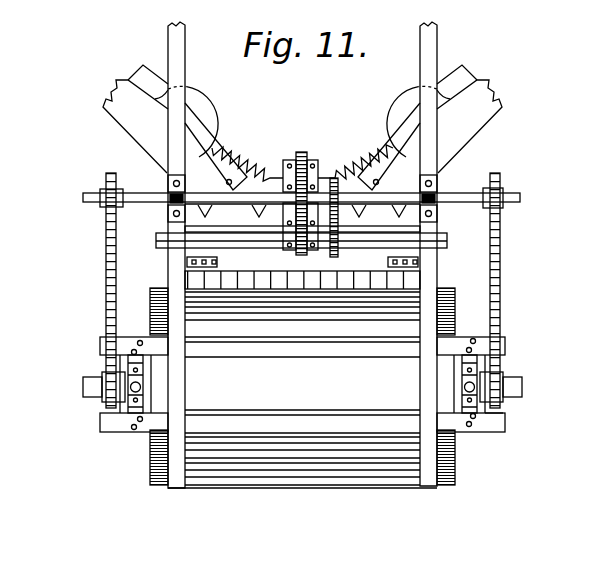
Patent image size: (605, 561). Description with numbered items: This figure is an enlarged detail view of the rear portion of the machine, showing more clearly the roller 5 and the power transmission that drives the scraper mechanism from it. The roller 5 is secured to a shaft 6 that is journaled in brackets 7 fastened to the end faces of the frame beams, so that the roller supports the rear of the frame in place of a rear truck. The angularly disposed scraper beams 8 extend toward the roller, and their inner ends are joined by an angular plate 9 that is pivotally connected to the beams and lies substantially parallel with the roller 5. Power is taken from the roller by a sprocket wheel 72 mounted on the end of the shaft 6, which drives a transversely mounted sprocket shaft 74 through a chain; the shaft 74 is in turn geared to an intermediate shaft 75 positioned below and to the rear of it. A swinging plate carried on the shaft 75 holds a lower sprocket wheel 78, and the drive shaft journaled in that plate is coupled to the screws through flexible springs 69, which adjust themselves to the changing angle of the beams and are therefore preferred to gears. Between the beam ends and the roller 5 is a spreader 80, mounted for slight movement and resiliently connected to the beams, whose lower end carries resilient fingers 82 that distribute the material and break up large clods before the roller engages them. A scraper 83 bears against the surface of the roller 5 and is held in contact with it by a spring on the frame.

The roller 5 is at (453, 450).
The shaft 6 is at (522, 384).
The brackets 7 is at (133, 380).
The scraper beam section 8 is at (132, 127).
The angular plate 9 is at (354, 207).
The springs 69 is at (245, 157).
The sprocket wheel 72 is at (504, 414).
The sprocket shaft 74 is at (85, 199).
The intermediate shaft 75 is at (447, 237).
The lower sprocket wheel 78 is at (304, 156).
The spreader 80 is at (238, 262).
The resilient fingers 82 is at (186, 281).
The scraper 83 is at (336, 488).